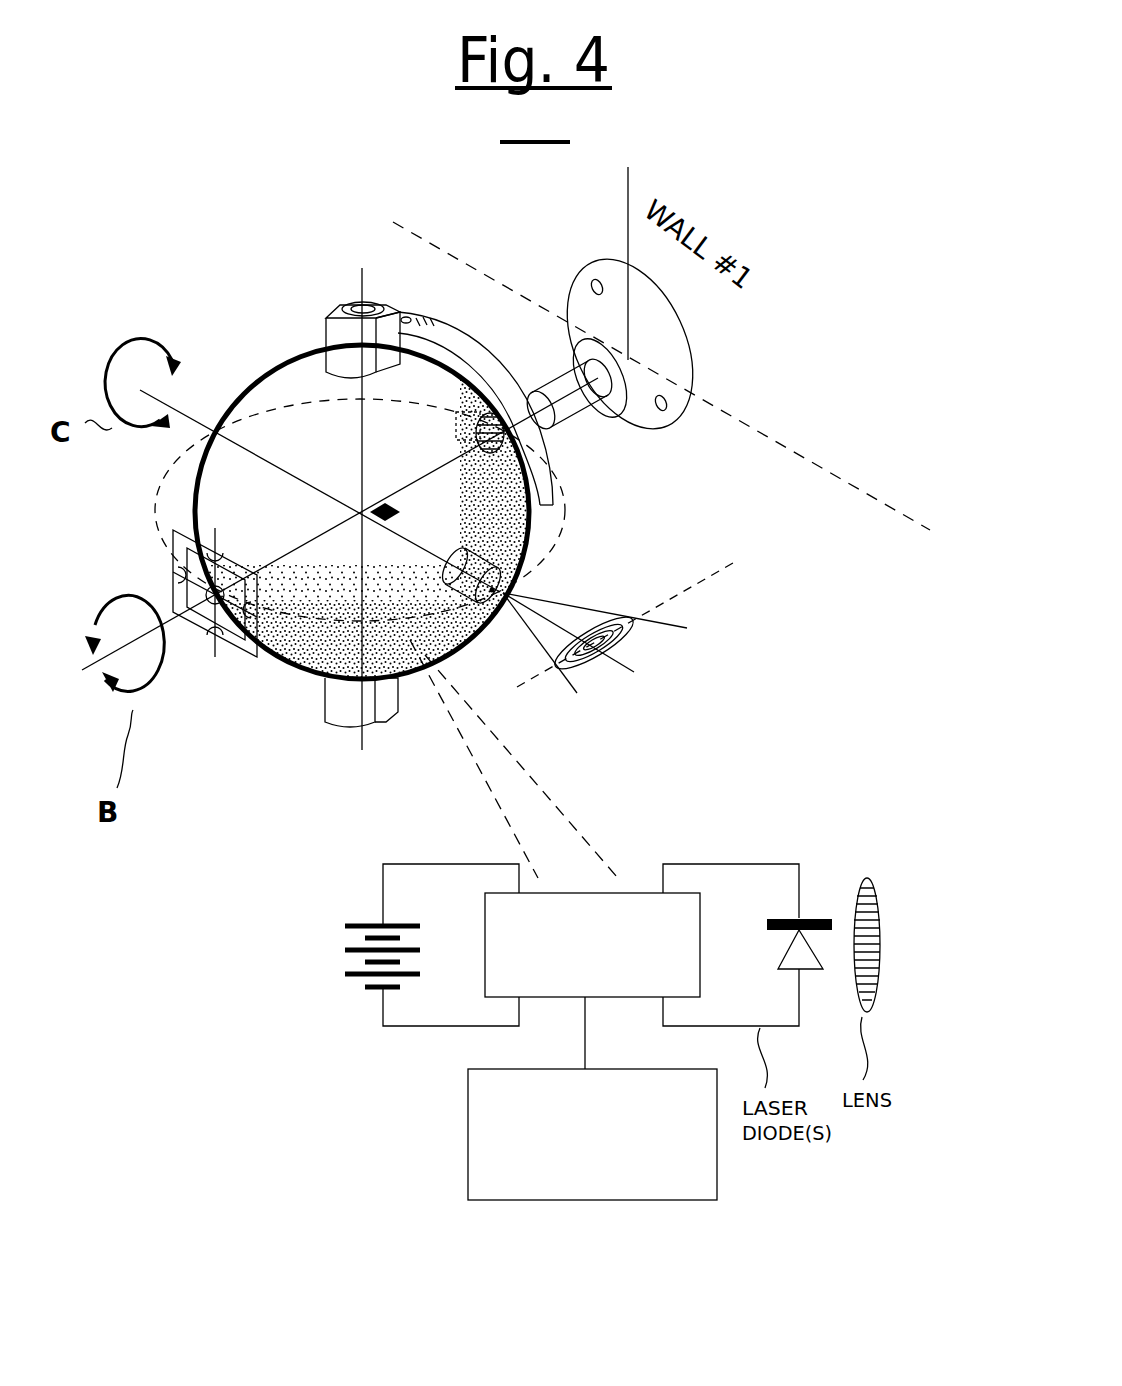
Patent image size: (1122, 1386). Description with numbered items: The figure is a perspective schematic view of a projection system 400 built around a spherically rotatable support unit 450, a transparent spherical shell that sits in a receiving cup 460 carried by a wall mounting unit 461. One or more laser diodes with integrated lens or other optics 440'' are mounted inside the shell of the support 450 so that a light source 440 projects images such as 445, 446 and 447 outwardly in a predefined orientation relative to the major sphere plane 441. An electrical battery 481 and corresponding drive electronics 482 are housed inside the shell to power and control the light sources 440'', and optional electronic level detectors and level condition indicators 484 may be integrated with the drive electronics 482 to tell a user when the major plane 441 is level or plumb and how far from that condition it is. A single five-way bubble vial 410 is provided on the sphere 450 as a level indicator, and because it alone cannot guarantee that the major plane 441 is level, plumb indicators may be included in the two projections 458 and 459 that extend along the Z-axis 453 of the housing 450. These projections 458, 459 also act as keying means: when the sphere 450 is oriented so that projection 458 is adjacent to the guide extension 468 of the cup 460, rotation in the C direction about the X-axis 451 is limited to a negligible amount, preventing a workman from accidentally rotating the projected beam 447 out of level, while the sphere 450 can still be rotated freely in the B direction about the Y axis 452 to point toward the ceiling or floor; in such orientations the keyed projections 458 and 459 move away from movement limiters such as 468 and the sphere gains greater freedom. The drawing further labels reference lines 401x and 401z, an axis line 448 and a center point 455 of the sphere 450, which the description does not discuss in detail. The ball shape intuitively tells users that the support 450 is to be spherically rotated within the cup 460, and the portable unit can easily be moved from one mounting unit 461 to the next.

The projection system 400 is at (382, 391).
The x axis 401x is at (372, 210).
The z axis (wall vertical) 401z is at (630, 160).
The five-way bubble vial 410 is at (187, 632).
The light source 440 is at (479, 639).
The laser diodes with integrated lens or other optics 440'' is at (771, 941).
The major sphere plane 441 is at (548, 540).
The projected image 445 is at (605, 660).
The projected image 446 is at (688, 660).
The projected beam 447 is at (690, 628).
The beam axis 448 is at (697, 583).
The spherical support unit 450 is at (250, 660).
The X-axis 451 is at (110, 358).
The Y axis 452 is at (68, 680).
The Z-axis 453 is at (360, 749).
The center point 455 is at (402, 513).
The projection 458 is at (323, 312).
The projection 459 is at (392, 728).
The receiving cup 460 is at (528, 407).
The mounting unit 461 is at (678, 445).
The guide extension 468 is at (425, 323).
The electrical battery 481 is at (423, 945).
The drive electronics 482 is at (592, 945).
The optional electronic level detectors and indicators 484 is at (592, 1134).